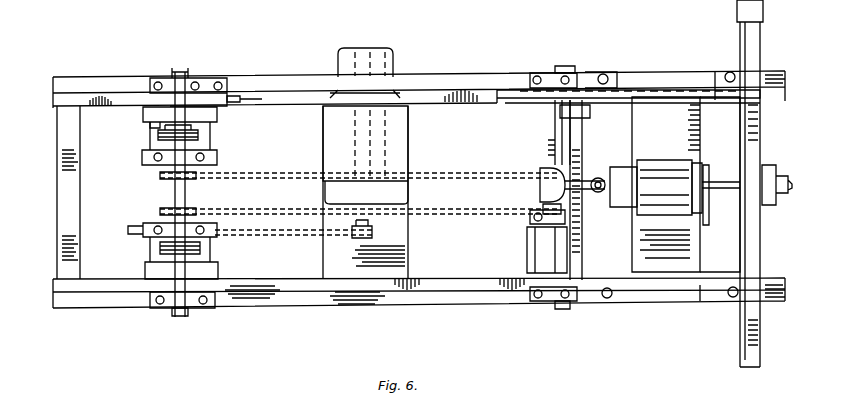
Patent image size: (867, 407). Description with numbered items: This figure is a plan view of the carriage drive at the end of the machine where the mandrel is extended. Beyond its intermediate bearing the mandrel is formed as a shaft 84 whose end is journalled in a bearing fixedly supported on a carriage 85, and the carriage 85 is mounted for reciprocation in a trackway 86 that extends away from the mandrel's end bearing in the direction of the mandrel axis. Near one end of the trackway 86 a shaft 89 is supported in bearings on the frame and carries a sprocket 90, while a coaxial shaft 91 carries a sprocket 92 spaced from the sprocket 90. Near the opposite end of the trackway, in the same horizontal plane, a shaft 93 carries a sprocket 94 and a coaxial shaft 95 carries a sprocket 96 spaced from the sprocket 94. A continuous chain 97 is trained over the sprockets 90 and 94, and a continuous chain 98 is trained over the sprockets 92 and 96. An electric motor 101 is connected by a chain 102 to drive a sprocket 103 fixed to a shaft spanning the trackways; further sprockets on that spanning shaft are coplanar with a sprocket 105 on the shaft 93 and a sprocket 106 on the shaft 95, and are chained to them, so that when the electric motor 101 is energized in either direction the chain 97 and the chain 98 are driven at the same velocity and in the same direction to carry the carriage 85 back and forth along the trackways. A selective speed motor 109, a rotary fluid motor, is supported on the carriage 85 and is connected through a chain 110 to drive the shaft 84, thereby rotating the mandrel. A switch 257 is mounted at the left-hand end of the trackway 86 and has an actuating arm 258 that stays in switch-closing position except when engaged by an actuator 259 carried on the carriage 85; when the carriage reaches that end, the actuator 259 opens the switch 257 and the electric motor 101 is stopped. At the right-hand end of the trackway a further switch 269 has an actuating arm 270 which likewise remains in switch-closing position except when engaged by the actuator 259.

The shaft 84 is at (783, 176).
The carriage 85 is at (582, 221).
The trackway 86 is at (470, 106).
The shaft 89 is at (567, 245).
The sprocket 90 is at (543, 209).
The shaft 91 is at (571, 146).
The sprocket 92 is at (540, 178).
The shaft 93 is at (178, 270).
The sprocket 94 is at (160, 211).
The shaft 95 is at (186, 147).
The sprocket 96 is at (160, 176).
The chain 97 is at (285, 210).
The chain 98 is at (273, 172).
The electric motor 101 is at (398, 150).
The chain 102 is at (315, 240).
The sprocket 103 is at (128, 230).
The sprocket 105 is at (200, 248).
The sprocket 106 is at (158, 135).
The selective speed motor 109 is at (700, 166).
The chain 110 is at (707, 200).
The switch 257 is at (210, 100).
The actuating arm 258 is at (143, 112).
The actuator 259 is at (585, 116).
The switch 269 is at (513, 103).
The actuating arm 270 is at (570, 100).